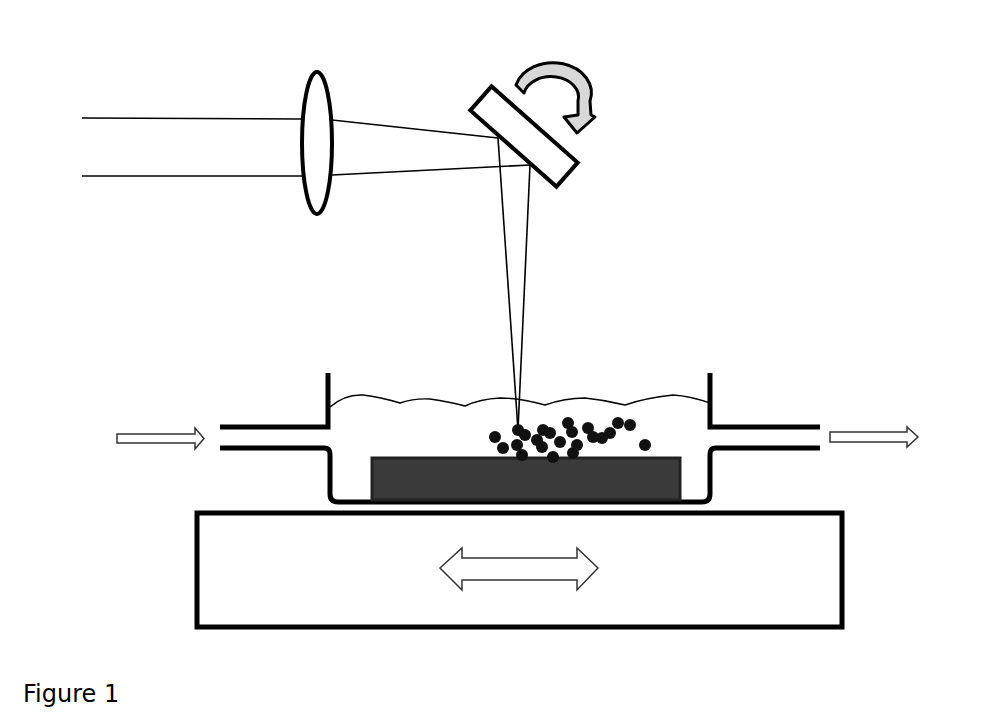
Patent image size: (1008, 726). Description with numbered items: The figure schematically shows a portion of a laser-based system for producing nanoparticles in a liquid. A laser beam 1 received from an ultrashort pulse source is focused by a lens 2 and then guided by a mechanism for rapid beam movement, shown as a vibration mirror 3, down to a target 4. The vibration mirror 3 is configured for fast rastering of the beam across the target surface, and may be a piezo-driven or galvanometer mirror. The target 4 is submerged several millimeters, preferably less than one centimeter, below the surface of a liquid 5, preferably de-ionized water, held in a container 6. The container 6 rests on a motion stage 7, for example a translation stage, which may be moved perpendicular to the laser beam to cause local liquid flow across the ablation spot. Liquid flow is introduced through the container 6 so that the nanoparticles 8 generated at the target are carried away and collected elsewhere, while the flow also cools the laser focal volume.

The laser beam 1 is at (93, 108).
The lens 2 is at (318, 72).
The vibration mirror 3 is at (573, 173).
The target 4 is at (397, 458).
The liquid 5 is at (640, 392).
The container 6 is at (717, 392).
The motion stage 7 is at (197, 570).
The nanoparticles 8 is at (592, 425).